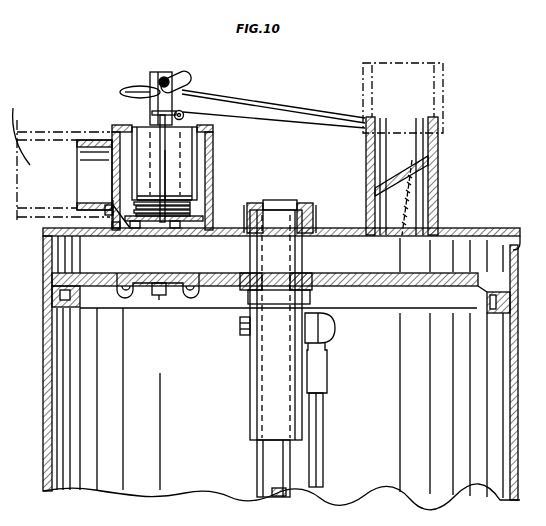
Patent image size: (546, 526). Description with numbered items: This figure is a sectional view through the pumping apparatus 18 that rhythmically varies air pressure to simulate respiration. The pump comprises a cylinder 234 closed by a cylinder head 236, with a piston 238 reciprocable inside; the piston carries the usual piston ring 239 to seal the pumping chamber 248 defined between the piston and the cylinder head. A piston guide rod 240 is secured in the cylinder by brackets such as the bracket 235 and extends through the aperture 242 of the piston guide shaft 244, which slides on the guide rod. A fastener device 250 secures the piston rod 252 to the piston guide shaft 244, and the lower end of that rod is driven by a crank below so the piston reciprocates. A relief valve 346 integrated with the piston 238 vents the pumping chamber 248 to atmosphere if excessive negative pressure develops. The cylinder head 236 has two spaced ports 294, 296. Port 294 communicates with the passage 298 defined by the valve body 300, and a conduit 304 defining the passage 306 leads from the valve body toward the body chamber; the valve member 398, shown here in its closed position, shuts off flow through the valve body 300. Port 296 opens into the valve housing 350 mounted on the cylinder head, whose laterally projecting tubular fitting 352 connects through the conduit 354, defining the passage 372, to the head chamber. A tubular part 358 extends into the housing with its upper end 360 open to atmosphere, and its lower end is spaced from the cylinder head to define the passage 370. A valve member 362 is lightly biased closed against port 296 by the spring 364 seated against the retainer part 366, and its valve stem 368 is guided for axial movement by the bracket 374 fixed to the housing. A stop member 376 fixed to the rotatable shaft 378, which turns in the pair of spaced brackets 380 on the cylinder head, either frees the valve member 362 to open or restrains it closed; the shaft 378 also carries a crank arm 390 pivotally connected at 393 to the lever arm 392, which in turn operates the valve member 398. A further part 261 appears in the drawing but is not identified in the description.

The pumping apparatus 18 is at (40, 478).
The cylinder 234 is at (45, 385).
The bracket 235 is at (314, 210).
The cylinder head 236 is at (482, 227).
The piston 238 is at (345, 273).
The piston ring 239 is at (495, 313).
The piston guide rod 240 is at (257, 465).
The aperture 242 is at (258, 405).
The piston guide shaft 244 is at (250, 377).
The pumping chamber 248 is at (80, 253).
The fastener device 250 is at (336, 329).
The piston rod 252 is at (327, 413).
The fastener 261 is at (112, 232).
The port 294 is at (407, 238).
The port 296 is at (135, 236).
The passage 298 is at (425, 200).
The valve body 300 is at (438, 150).
The conduit 304 is at (443, 92).
The passage 306 is at (420, 72).
The relief valve 346 is at (190, 272).
The valve housing 350 is at (213, 168).
The tubular fitting 352 is at (90, 138).
The conduit 354 is at (48, 131).
The tubular part 358 is at (197, 150).
The upper end 360 is at (130, 126).
The valve member 362 is at (175, 236).
The spring 364 is at (203, 218).
The retainer part 366 is at (188, 195).
The valve stem 368 is at (168, 172).
The passage 370 is at (118, 210).
The passage 372 is at (21, 156).
The bracket 374 is at (198, 138).
The stop member 376 is at (185, 72).
The rotatable shaft 378 is at (162, 74).
The brackets 380 is at (126, 92).
The crank arm 390 is at (182, 110).
The lever arm 392 is at (308, 123).
The pivotal connection 393 is at (205, 113).
The valve member 398 is at (375, 185).